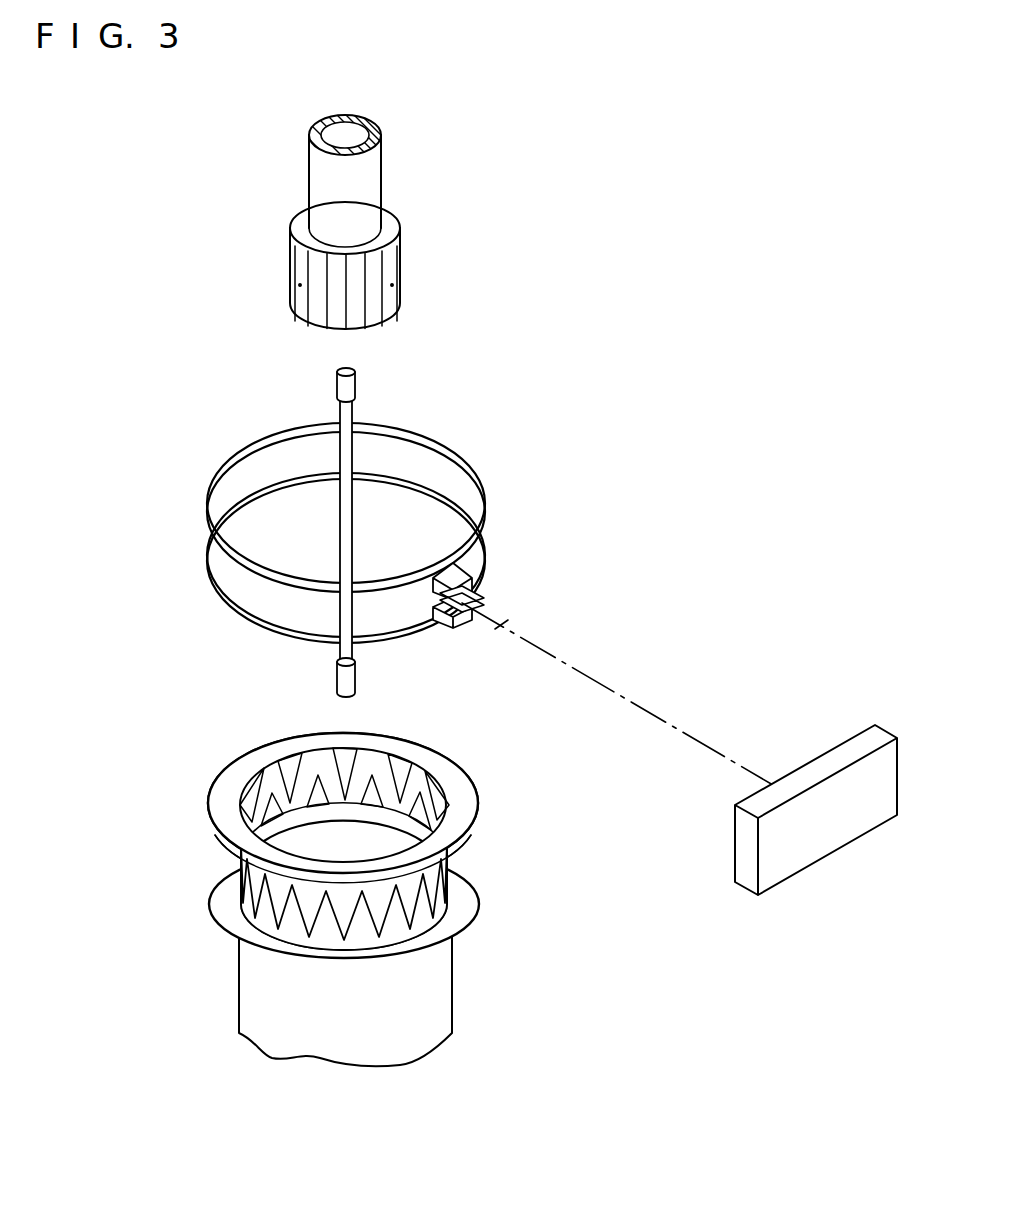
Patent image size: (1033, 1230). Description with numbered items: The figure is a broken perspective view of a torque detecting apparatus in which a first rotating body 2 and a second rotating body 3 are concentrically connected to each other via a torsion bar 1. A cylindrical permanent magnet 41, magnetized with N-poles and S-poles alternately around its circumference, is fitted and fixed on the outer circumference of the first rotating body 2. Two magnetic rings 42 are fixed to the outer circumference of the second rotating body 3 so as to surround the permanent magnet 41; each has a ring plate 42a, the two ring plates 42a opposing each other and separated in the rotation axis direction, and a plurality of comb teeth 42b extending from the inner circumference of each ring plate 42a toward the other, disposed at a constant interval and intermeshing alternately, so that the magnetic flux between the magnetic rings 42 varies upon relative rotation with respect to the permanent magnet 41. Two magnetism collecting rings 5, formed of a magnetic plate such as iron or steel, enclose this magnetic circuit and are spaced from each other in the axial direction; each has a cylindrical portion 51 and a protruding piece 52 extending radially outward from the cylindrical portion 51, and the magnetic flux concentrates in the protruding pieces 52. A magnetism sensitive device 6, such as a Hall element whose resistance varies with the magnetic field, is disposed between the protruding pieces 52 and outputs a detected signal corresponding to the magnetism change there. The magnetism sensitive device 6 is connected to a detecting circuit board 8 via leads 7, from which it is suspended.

The torsion bar 1 is at (352, 407).
The first rotating body 2 is at (377, 178).
The second rotating body 3 is at (437, 998).
The permanent magnet 41 is at (400, 262).
The magnetic ring 42 is at (335, 819).
The ring plate 42a is at (470, 800).
The comb teeth 42b is at (277, 785).
The magnetism collecting ring 5 is at (376, 548).
The cylindrical portion 51 is at (467, 462).
The protruding piece 52 is at (455, 580).
The magnetism sensitive device 6 is at (468, 598).
The leads 7 is at (598, 682).
The detecting circuit board 8 is at (827, 747).